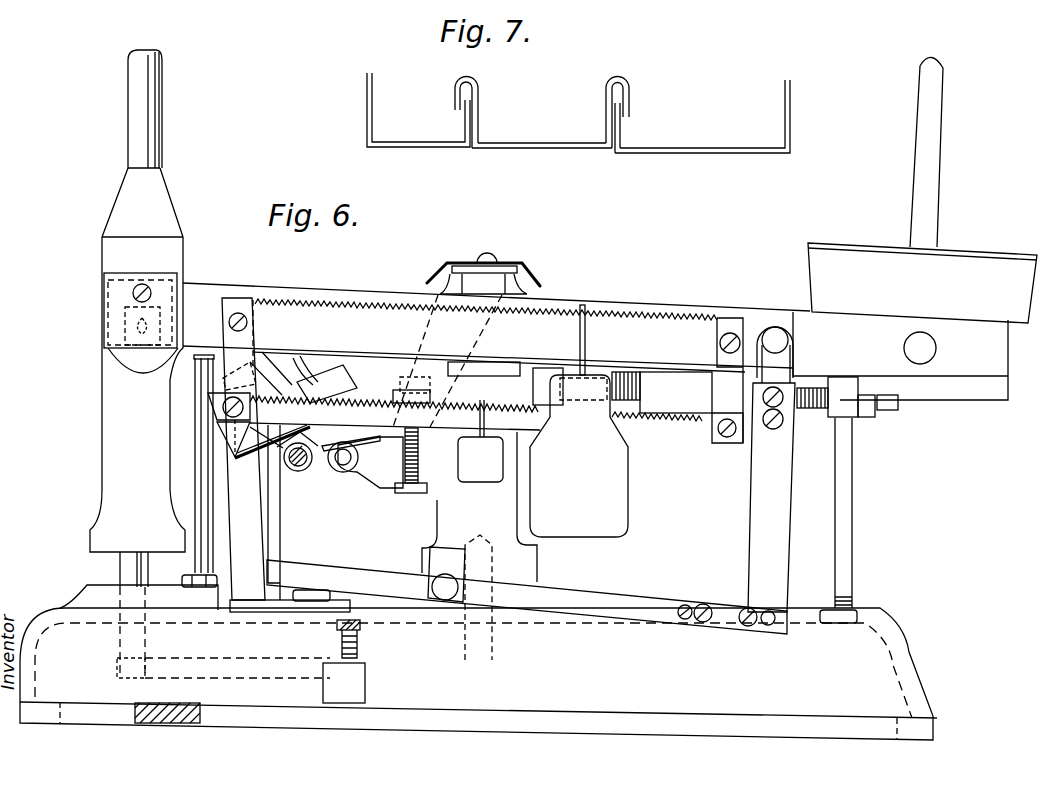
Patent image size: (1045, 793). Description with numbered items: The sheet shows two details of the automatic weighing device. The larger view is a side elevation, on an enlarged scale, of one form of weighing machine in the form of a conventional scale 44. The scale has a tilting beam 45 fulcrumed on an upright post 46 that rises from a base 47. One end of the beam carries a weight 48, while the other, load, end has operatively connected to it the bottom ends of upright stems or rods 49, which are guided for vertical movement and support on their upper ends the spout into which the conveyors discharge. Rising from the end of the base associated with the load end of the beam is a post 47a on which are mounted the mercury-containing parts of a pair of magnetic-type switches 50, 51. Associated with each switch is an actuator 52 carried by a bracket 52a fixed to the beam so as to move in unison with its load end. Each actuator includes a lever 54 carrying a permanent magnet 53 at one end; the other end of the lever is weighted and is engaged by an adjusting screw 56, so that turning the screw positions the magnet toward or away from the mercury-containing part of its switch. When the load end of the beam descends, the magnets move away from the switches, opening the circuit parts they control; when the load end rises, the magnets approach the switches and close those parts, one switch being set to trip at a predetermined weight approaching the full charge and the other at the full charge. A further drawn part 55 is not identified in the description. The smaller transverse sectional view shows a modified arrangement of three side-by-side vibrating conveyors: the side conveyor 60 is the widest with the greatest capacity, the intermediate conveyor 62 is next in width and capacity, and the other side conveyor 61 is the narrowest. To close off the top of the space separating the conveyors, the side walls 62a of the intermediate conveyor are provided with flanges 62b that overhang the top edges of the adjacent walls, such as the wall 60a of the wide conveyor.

In FIG. 6, the scale 44 is at (670, 262).
In FIG. 6, the tilting beam 45 is at (745, 307).
In FIG. 6, the upright post 46 is at (456, 510).
In FIG. 6, the base 47 is at (622, 681).
In FIG. 6, the post 47a is at (280, 543).
In FIG. 6, the weight 48 is at (851, 258).
In FIG. 6, the upright stems or rods 49 is at (128, 100).
In FIG. 6, the switch 50 is at (217, 450).
In FIG. 6, the switch 51 is at (250, 465).
In FIG. 6, the actuator 52 is at (361, 484).
In FIG. 6, the bracket 52a is at (408, 380).
In FIG. 6, the permanent magnet 53 is at (297, 477).
In FIG. 6, the lever 54 is at (338, 449).
In FIG. 6, the link 55 is at (346, 450).
In FIG. 6, the adjusting screw 56 is at (420, 487).
In FIG. 7, the side conveyor 60 is at (702, 129).
In FIG. 7, the wall 60a is at (620, 132).
In FIG. 7, the side conveyor 61 is at (406, 136).
In FIG. 7, the intermediate conveyor 62 is at (548, 128).
In FIG. 7, the side walls 62a is at (478, 118).
In FIG. 7, the flanges 62b is at (458, 100).